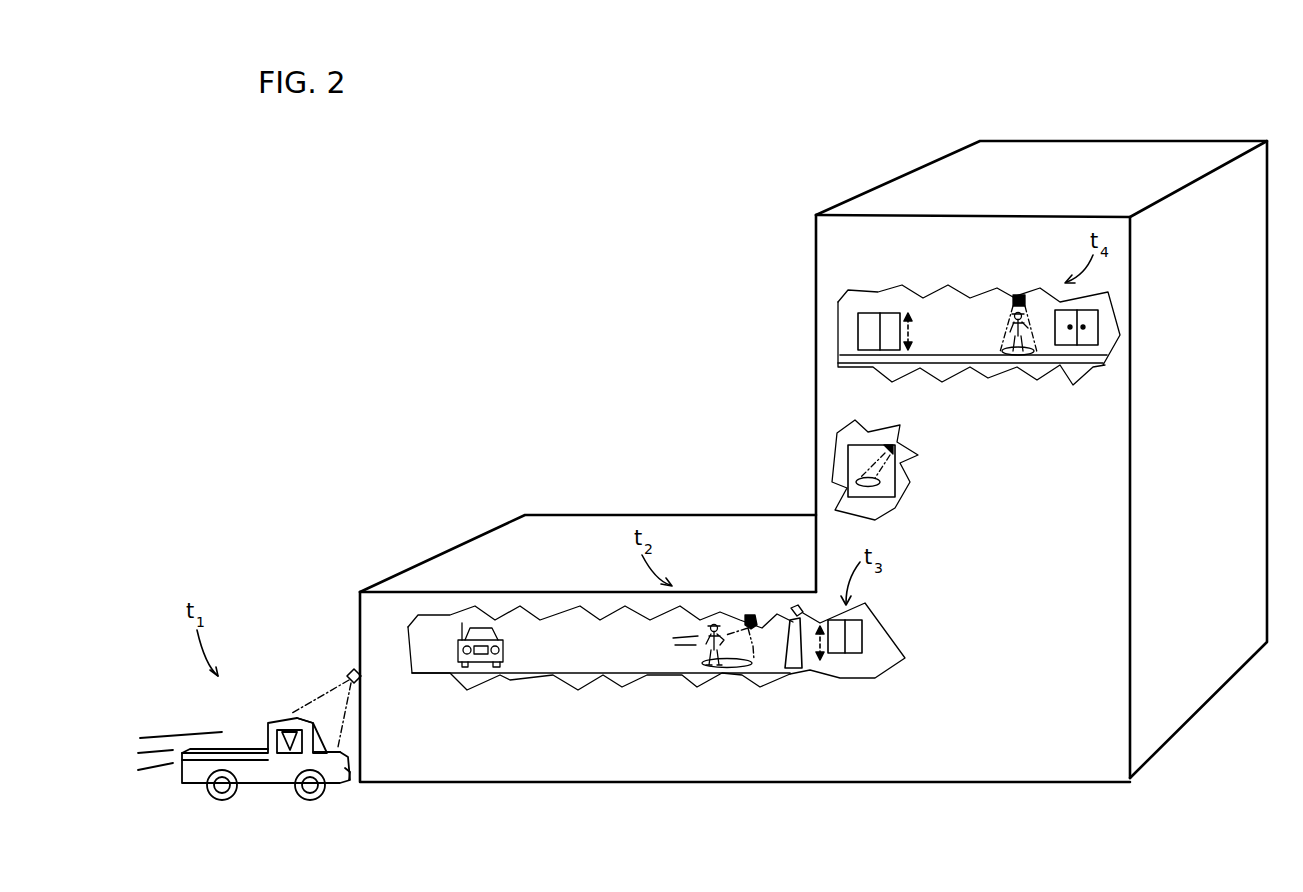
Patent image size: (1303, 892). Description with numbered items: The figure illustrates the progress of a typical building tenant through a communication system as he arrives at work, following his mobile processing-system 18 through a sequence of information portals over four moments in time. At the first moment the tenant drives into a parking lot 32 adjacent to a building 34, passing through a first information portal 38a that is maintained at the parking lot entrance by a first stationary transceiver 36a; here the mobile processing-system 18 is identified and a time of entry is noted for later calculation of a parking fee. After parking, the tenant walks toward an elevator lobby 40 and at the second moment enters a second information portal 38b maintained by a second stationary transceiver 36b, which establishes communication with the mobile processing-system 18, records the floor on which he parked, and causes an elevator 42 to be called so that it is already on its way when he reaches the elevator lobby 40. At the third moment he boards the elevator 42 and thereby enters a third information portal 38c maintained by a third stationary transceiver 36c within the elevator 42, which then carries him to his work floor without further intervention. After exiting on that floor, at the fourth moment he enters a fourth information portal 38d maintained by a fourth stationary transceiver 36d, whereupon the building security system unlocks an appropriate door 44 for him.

The mobile processing-system 18 is at (702, 655).
The parking lot 32 is at (358, 611).
The building 34 is at (888, 182).
The first stationary transceiver 36a is at (351, 672).
The second stationary transceiver 36b is at (750, 616).
The third stationary transceiver 36c is at (882, 446).
The fourth stationary transceiver 36d is at (1017, 294).
The first information portal 38a is at (314, 698).
The second information portal 38b is at (738, 647).
The third information portal 38c is at (895, 478).
The fourth information portal 38d is at (1037, 320).
The elevator lobby 40 is at (794, 617).
The elevator 42 is at (855, 630).
The door 44 is at (1102, 322).